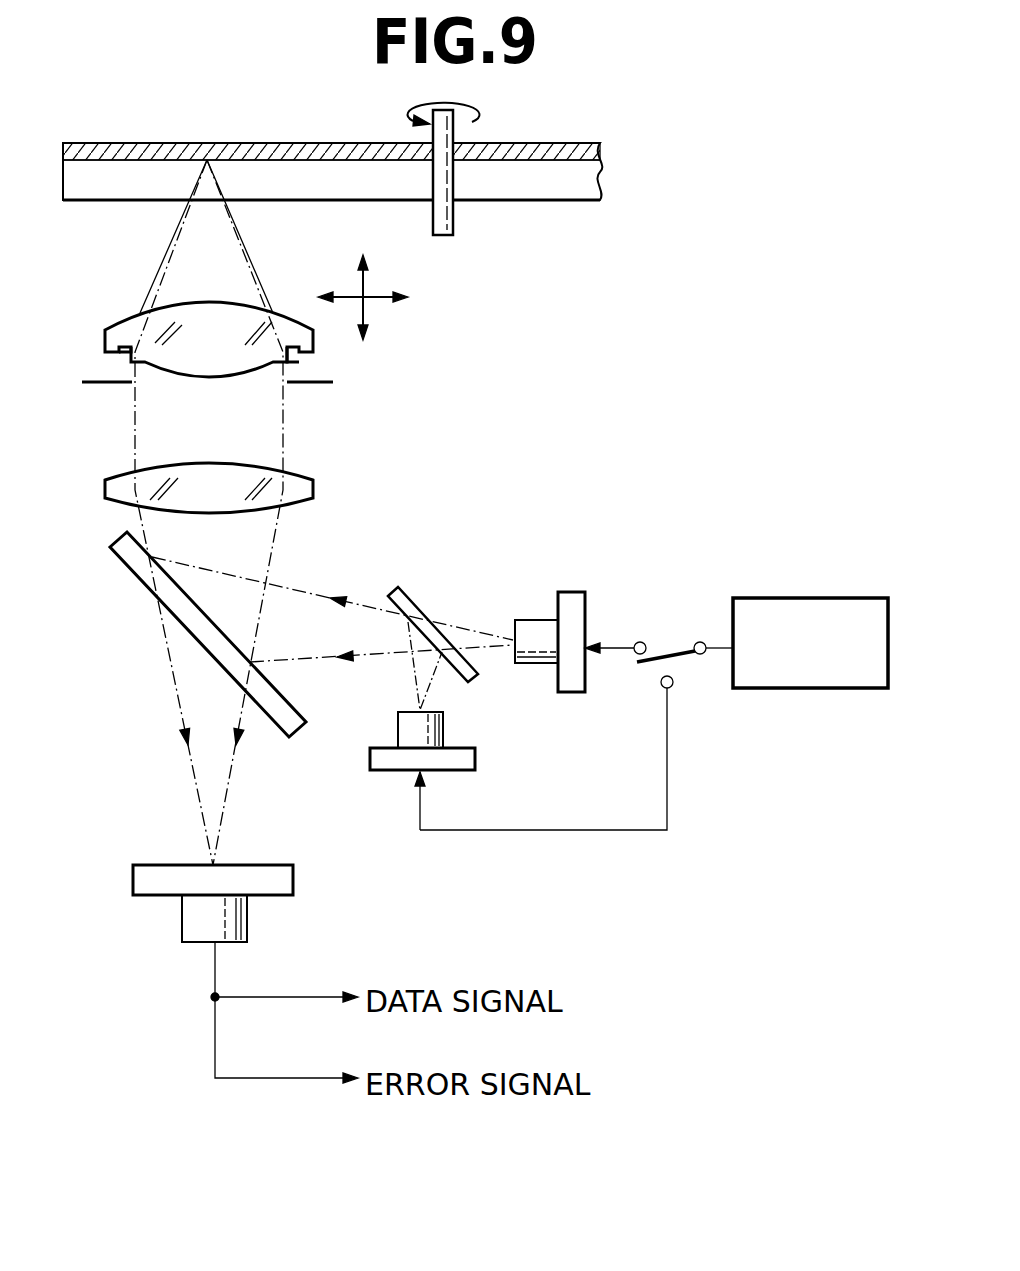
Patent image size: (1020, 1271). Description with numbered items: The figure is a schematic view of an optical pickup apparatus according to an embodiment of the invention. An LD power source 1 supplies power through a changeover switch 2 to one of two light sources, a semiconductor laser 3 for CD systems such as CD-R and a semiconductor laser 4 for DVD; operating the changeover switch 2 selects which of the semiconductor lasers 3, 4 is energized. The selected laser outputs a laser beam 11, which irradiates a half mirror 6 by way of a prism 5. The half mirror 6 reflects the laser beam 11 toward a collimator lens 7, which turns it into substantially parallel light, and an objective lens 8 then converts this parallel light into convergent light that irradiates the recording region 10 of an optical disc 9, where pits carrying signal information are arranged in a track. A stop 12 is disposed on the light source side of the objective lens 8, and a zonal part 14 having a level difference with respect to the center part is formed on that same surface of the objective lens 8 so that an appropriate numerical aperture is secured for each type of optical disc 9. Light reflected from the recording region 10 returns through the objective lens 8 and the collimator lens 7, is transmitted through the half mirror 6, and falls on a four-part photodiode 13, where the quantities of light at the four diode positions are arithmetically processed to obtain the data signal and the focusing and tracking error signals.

The LD power source 1 is at (818, 598).
The changeover switch 2 is at (664, 652).
The semiconductor laser 3 is at (522, 620).
The semiconductor laser 4 is at (444, 725).
The prism 5 is at (407, 605).
The half mirror 6 is at (133, 562).
The collimator lens 7 is at (312, 487).
The objective lens 8 is at (105, 340).
The optical disc 9 is at (107, 185).
The recording region 10 is at (122, 145).
The laser beam 11 is at (305, 590).
The stop 12 is at (105, 384).
The four-part photodiode 13 is at (275, 862).
The zonal part 14 is at (120, 353).